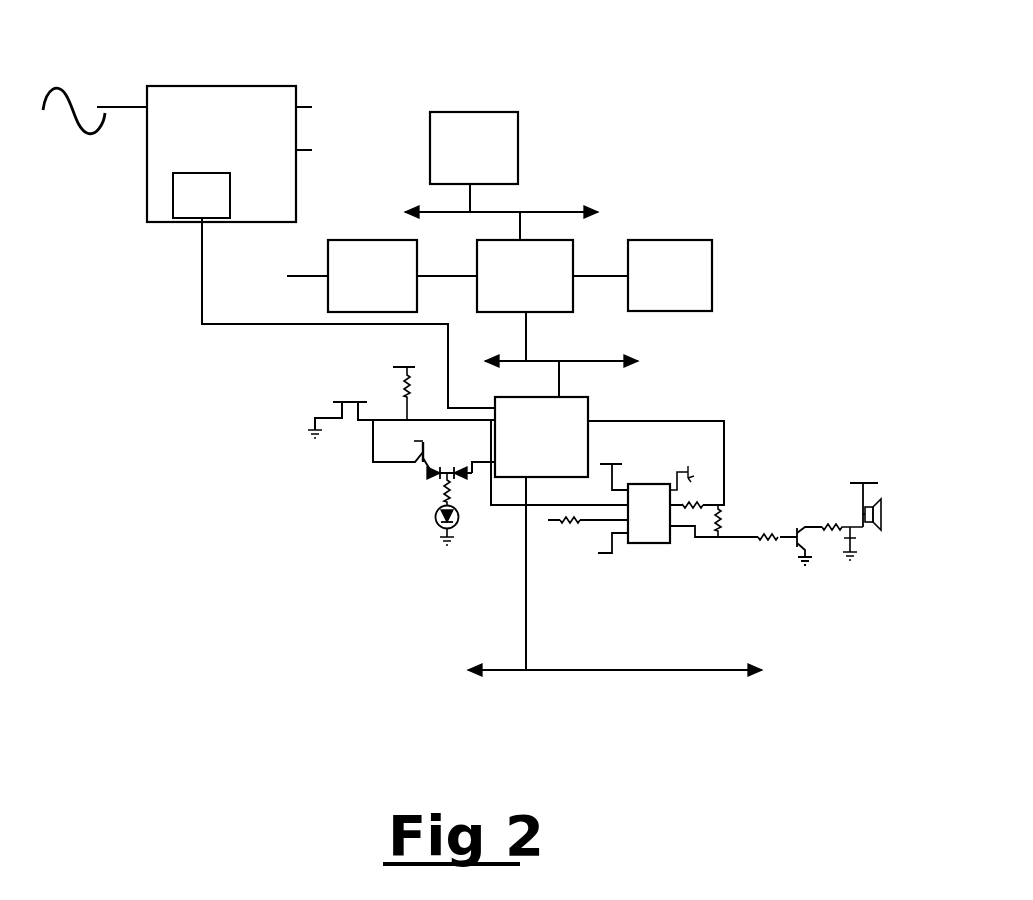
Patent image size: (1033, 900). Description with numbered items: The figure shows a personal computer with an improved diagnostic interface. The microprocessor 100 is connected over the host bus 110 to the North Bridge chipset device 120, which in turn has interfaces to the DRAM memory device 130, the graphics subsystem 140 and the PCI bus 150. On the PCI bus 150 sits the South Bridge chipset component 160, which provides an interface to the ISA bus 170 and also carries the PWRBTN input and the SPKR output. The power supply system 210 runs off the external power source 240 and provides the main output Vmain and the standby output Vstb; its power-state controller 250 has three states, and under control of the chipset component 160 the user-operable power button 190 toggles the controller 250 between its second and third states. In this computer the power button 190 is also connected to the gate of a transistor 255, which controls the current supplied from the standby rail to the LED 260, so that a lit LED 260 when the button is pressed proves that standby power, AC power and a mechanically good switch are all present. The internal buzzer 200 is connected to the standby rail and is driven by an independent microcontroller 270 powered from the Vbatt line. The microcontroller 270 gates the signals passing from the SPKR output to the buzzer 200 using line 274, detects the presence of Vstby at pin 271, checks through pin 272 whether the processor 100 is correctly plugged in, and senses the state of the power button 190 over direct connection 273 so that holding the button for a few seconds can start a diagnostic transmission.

The microprocessor 100 is at (520, 140).
The host bus 110 is at (558, 212).
The North Bridge chipset device 120 is at (549, 307).
The DRAM memory device 130 is at (688, 238).
The graphics subsystem 140 is at (380, 240).
The PCI bus 150 is at (602, 344).
The South Bridge chipset component 160 is at (522, 397).
The ISA bus 170 is at (641, 673).
The power button 190 is at (345, 400).
The buzzer 200 is at (882, 535).
The power supply system 210 is at (258, 85).
The external power source 240 is at (117, 106).
The power-state controller 250 is at (173, 208).
The transistor 255 is at (413, 465).
The LED 260 is at (434, 517).
The microcontroller 270 is at (660, 543).
The pin 271 is at (607, 556).
The pin 272 is at (548, 520).
The direct connection 273 is at (508, 510).
The line 274 is at (708, 540).